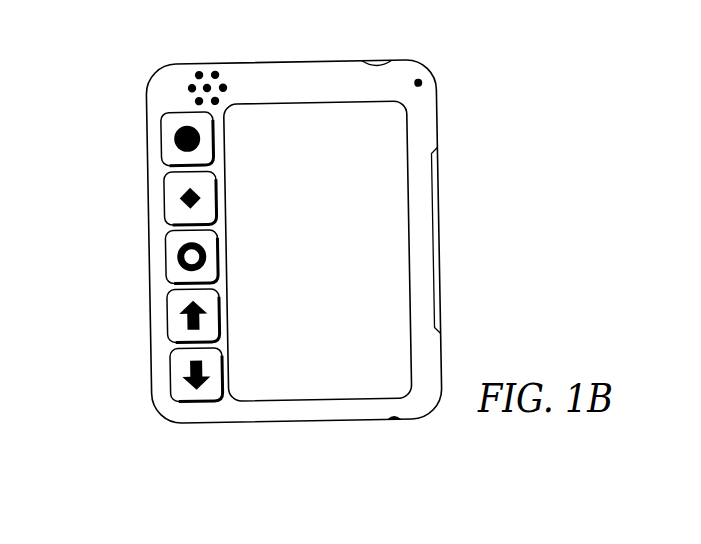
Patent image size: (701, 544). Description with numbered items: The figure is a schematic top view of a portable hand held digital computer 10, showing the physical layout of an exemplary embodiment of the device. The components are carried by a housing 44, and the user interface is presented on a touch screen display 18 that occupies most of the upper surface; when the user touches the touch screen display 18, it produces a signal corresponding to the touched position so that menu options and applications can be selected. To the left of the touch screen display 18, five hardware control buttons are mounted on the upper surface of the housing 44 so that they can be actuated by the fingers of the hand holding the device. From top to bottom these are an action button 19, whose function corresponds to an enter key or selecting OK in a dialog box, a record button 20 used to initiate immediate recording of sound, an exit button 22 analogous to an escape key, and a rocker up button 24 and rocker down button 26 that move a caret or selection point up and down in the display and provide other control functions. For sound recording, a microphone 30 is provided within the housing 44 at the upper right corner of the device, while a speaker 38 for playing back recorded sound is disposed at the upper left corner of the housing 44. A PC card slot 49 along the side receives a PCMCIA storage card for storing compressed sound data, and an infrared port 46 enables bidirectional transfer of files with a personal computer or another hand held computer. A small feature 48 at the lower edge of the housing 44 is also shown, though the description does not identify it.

The hand held digital computer 10 is at (90, 389).
The touch screen display 18 is at (335, 248).
The action button 19 is at (161, 140).
The record button 20 is at (165, 196).
The exit button 22 is at (166, 255).
The rocker up button 24 is at (168, 316).
The rocker down button 26 is at (171, 372).
The microphone 30 is at (424, 83).
The speaker 38 is at (198, 72).
The housing 44 is at (263, 62).
The infrared port 46 is at (385, 62).
The connector port 48 is at (390, 424).
The PC card slot 49 is at (436, 153).